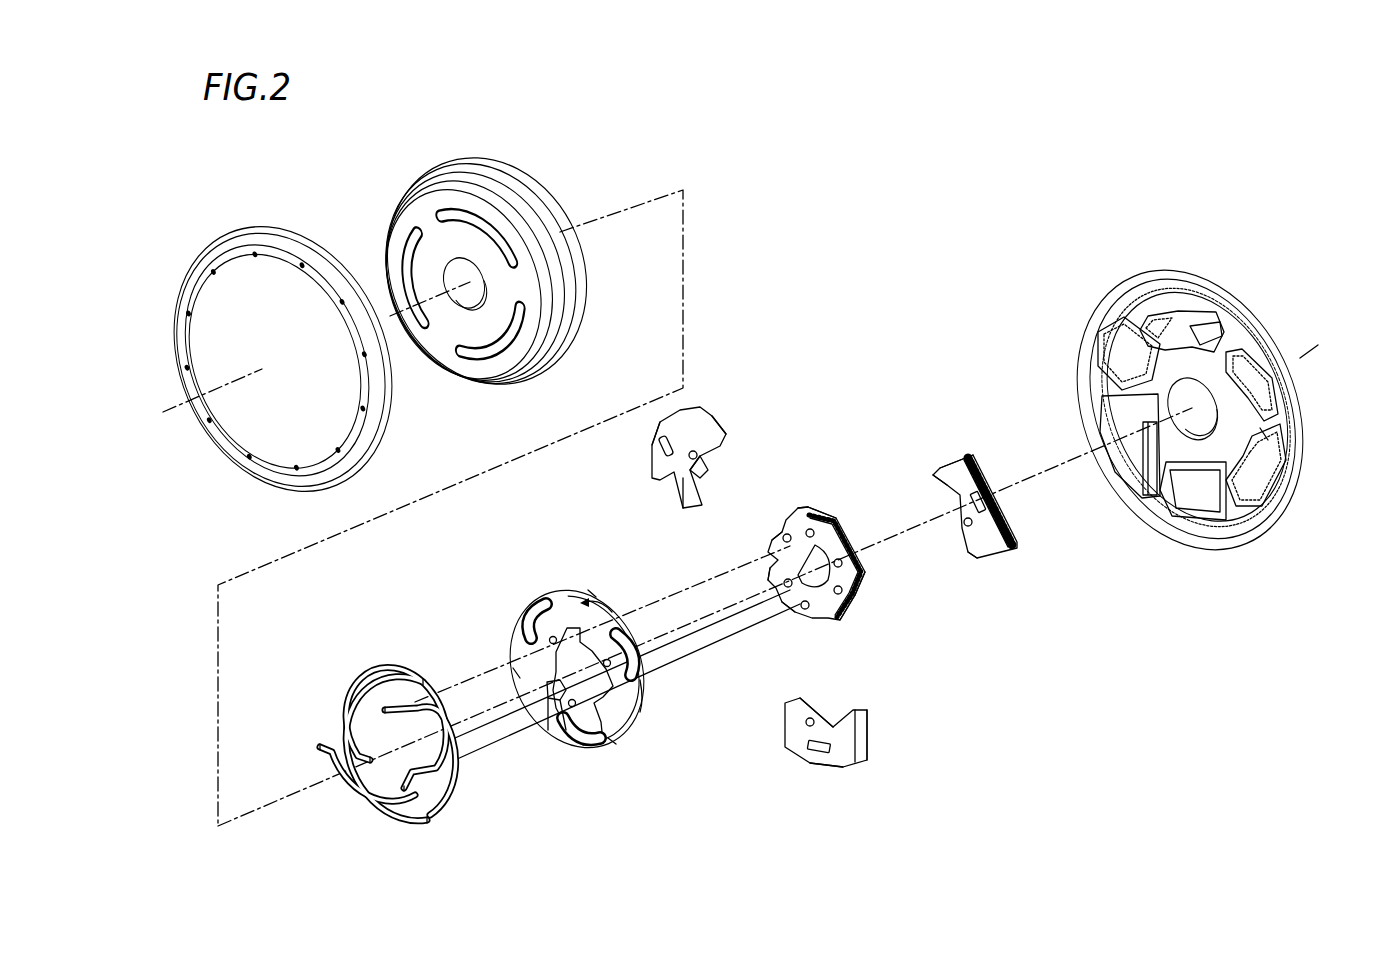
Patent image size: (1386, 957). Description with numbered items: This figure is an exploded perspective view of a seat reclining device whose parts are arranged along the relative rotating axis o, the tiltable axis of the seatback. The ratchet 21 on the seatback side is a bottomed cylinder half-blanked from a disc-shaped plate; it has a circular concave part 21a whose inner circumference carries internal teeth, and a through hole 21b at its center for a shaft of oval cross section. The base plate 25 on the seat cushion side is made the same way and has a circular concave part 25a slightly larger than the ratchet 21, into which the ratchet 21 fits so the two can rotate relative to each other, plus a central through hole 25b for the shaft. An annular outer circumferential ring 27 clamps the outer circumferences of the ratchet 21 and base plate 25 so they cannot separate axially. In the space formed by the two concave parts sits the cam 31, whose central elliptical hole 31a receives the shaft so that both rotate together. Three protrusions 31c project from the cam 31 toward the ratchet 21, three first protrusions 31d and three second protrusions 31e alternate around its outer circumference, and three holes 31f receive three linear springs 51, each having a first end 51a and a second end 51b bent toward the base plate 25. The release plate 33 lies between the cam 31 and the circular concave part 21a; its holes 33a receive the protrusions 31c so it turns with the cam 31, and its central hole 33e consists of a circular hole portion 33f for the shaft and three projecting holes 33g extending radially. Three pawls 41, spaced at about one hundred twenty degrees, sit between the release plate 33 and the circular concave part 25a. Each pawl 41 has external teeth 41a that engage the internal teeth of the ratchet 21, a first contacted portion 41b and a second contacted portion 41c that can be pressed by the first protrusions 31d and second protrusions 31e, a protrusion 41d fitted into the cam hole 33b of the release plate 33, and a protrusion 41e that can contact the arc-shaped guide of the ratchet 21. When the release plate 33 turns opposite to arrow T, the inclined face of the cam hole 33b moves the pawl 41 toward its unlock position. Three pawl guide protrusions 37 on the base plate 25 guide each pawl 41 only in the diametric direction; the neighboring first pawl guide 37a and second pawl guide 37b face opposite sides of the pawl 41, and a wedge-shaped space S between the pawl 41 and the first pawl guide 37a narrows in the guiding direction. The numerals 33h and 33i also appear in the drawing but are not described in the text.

The outer circumferential ring 27 is at (244, 216).
The ratchet 21 is at (488, 286).
The circular concave part 21a is at (482, 348).
The through hole 21b is at (495, 330).
The base plate 25 is at (1184, 383).
The circular concave part 25a is at (1198, 440).
The through hole 25b is at (1176, 440).
The pawl guide protrusion 37 is at (1182, 328).
The first pawl guide 37a is at (1230, 338).
The second pawl guide 37b is at (1135, 318).
The wedge-shaped space S is at (1110, 398).
The relative rotating axis o is at (1300, 358).
The pawl 41 is at (650, 472).
The external teeth 41a is at (654, 427).
The first contacted portion 41b is at (727, 450).
The second contacted portion 41c is at (694, 508).
The protrusion 41d is at (720, 432).
The protrusion 41e is at (706, 410).
The cam 31 is at (825, 562).
The elliptical hole 31a is at (840, 530).
The protrusion 31c is at (780, 535).
The first protrusion 31d is at (786, 512).
The second protrusion 31e is at (830, 520).
The hole 31f is at (808, 514).
The release plate 33 is at (588, 672).
The hole 33a is at (543, 612).
The cam hole 33b is at (520, 617).
The hole 33e is at (584, 768).
The circular hole portion 33f is at (590, 735).
The projecting hole 33g is at (553, 735).
The plate hole 33h is at (548, 590).
The plate notch 33i is at (590, 595).
The arrow T is at (596, 621).
The linear spring 51 is at (382, 731).
The first end 51a is at (386, 709).
The second end 51b is at (422, 678).